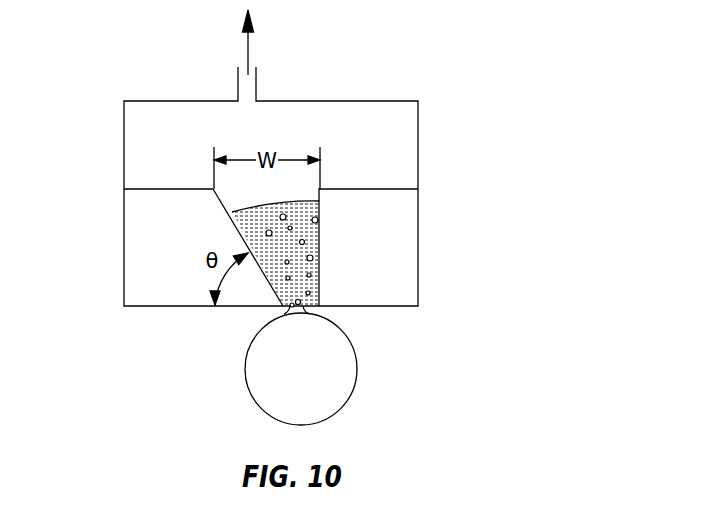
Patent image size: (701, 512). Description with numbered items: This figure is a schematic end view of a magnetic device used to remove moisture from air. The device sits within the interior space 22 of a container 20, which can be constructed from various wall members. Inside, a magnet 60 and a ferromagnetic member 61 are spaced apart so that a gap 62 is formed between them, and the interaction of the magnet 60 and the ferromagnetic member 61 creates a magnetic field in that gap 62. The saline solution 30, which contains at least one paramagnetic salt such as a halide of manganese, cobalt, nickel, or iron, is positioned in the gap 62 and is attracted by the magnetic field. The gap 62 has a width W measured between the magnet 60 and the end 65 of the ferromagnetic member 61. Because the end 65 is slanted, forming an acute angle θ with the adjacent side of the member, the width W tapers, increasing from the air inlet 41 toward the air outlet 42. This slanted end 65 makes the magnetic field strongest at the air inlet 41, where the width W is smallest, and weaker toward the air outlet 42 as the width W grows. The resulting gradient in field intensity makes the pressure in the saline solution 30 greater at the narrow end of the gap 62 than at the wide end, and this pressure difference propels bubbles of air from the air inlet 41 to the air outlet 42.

The container 20 is at (418, 148).
The interior space 22 is at (343, 138).
The saline solution 30 is at (277, 253).
The air inlet 41 is at (306, 310).
The air outlet 42 is at (257, 85).
The magnet 60 is at (383, 260).
The ferromagnetic member 61 is at (183, 260).
The gap 62 is at (302, 262).
The end 65 is at (232, 212).